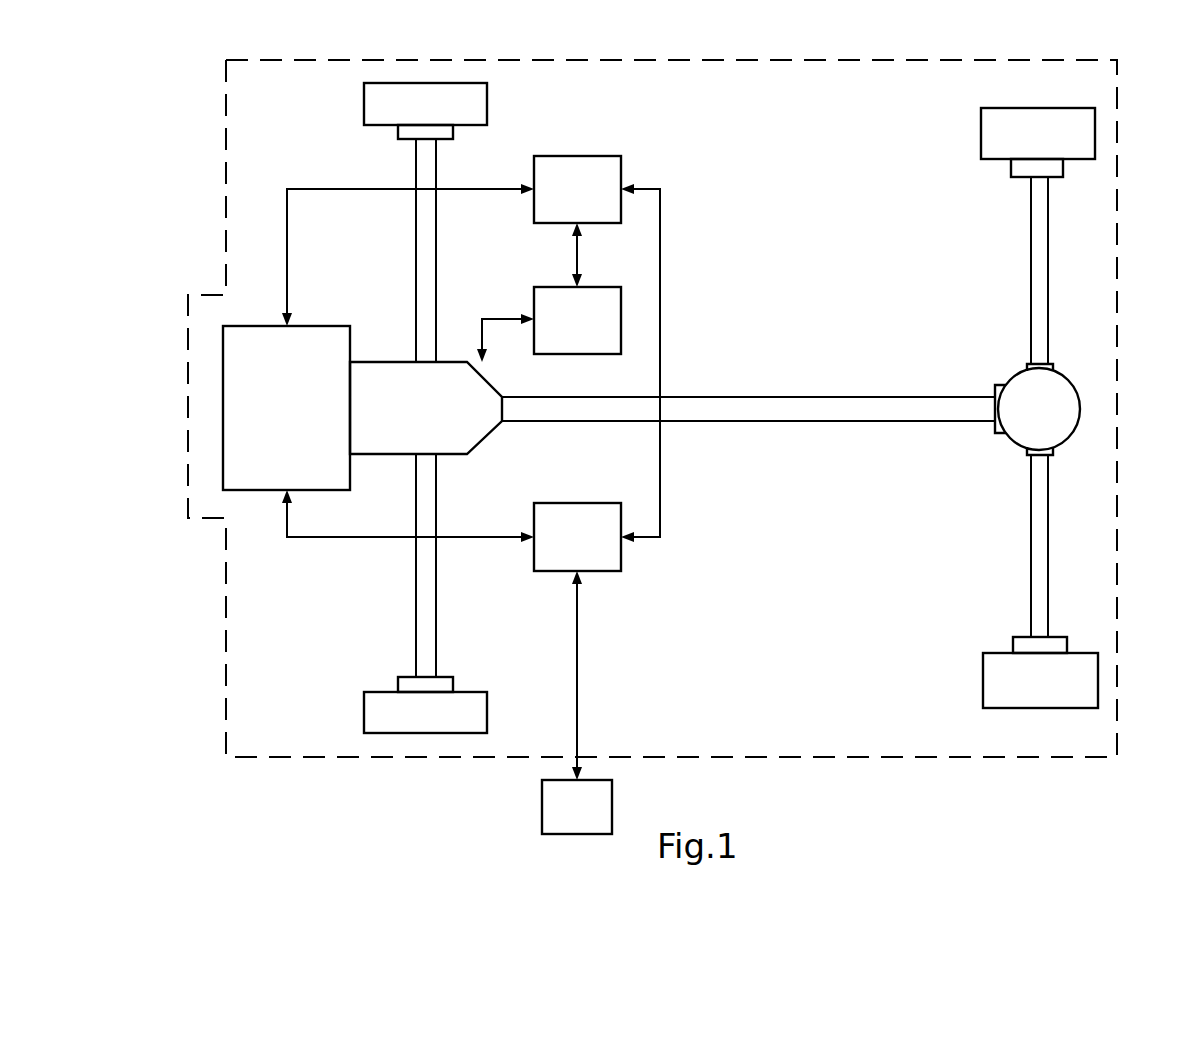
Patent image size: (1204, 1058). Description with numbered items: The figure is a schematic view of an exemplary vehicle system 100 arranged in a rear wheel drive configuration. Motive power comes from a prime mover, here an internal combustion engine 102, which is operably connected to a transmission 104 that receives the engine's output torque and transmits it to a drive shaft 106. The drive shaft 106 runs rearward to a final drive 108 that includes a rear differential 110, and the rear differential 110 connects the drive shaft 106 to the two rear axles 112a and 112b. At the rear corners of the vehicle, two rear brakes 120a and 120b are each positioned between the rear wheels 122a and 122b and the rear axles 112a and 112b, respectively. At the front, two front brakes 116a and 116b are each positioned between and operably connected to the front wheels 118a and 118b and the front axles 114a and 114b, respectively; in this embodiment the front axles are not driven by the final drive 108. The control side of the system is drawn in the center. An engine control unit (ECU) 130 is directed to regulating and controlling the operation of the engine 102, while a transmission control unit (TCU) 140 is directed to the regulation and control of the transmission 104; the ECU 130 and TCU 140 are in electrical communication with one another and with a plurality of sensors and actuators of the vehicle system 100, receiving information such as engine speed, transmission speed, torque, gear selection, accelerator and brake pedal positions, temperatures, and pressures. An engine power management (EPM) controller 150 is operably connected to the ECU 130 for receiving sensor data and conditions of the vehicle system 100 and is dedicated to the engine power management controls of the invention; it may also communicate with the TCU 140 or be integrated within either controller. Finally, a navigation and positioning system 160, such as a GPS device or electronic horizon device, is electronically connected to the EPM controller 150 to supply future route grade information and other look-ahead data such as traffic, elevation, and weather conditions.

The vehicle system 100 is at (1138, 77).
The internal combustion engine 102 is at (286, 408).
The transmission 104 is at (426, 408).
The drive shaft 106 is at (757, 397).
The final drive 108 is at (1098, 373).
The rear differential 110 is at (1006, 434).
The rear axle 112a is at (1031, 271).
The rear axle 112b is at (1031, 585).
The front axle 114a is at (416, 228).
The front axle 114b is at (416, 610).
The front brake 116a is at (398, 133).
The front brake 116b is at (398, 672).
The front wheel 118a is at (364, 96).
The front wheel 118b is at (364, 700).
The rear brake 120a is at (1011, 170).
The rear brake 120b is at (1013, 635).
The rear wheel 122a is at (981, 128).
The rear wheel 122b is at (983, 675).
The engine control unit (ECU) 130 is at (608, 156).
The transmission control unit (TCU) 140 is at (608, 287).
The engine power management (EPM) controller 150 is at (608, 503).
The navigation and positioning system 160 is at (542, 797).